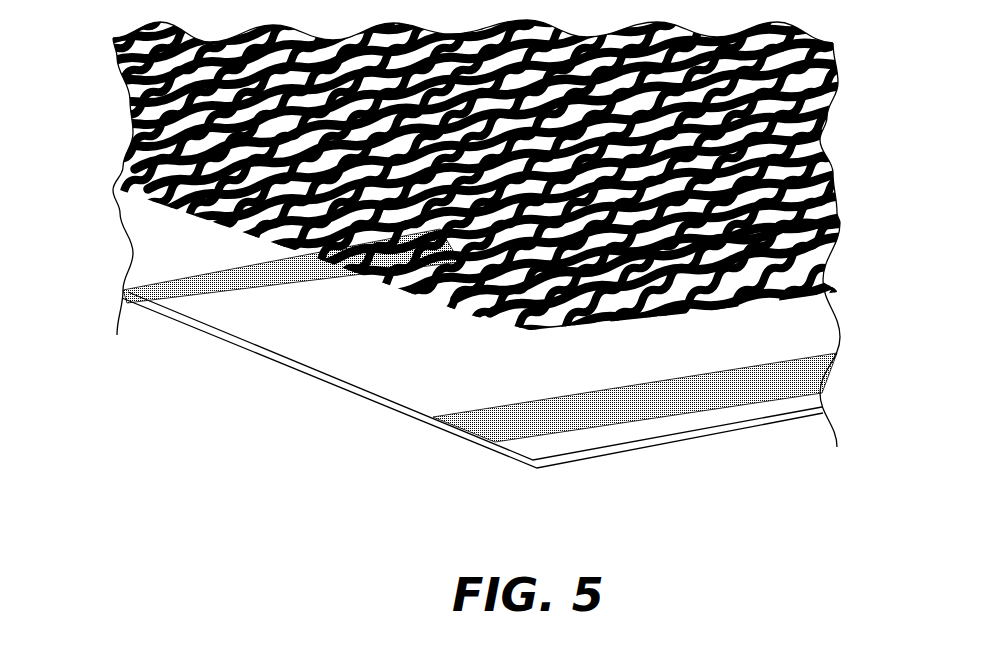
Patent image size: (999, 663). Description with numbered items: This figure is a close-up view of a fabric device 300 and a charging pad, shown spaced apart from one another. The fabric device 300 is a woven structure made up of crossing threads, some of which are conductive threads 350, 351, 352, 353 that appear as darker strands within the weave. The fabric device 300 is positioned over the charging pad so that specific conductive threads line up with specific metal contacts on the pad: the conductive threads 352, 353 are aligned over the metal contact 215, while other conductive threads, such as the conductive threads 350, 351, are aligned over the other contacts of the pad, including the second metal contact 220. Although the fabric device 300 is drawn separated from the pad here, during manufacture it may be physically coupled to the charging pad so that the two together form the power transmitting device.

The fabric device 300 is at (499, 223).
The conductive thread 350 is at (497, 316).
The conductive thread 351 is at (462, 304).
The conductive thread 352 is at (140, 184).
The conductive thread 353 is at (138, 170).
The metal contact 215 is at (127, 300).
The second metal contact 220 is at (460, 424).